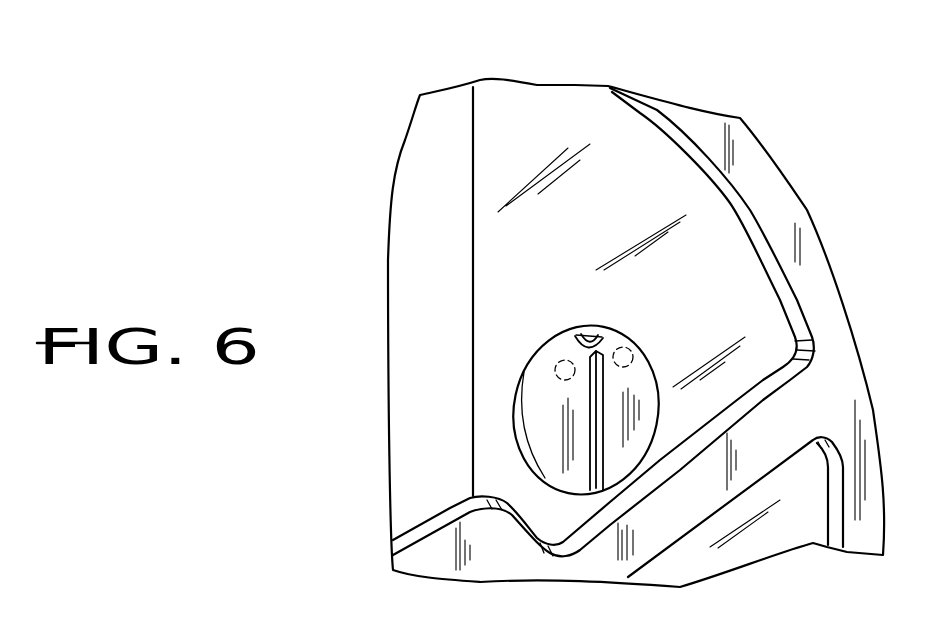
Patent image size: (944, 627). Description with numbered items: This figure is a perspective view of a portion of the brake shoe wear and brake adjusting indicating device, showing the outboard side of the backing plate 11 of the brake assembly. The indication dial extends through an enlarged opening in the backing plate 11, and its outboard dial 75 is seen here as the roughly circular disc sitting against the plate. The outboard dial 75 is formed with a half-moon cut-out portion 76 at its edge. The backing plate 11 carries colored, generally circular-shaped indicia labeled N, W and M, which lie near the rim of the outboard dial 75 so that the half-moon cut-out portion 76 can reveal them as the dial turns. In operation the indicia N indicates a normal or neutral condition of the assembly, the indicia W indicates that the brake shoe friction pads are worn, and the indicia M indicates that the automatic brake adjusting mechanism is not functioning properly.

The backing plate 11 is at (546, 110).
The outboard dial 75 is at (657, 377).
The half-moon cut-out portion 76 is at (583, 333).
The indicia N is at (587, 323).
The indicia M is at (553, 366).
The indicia W is at (644, 340).